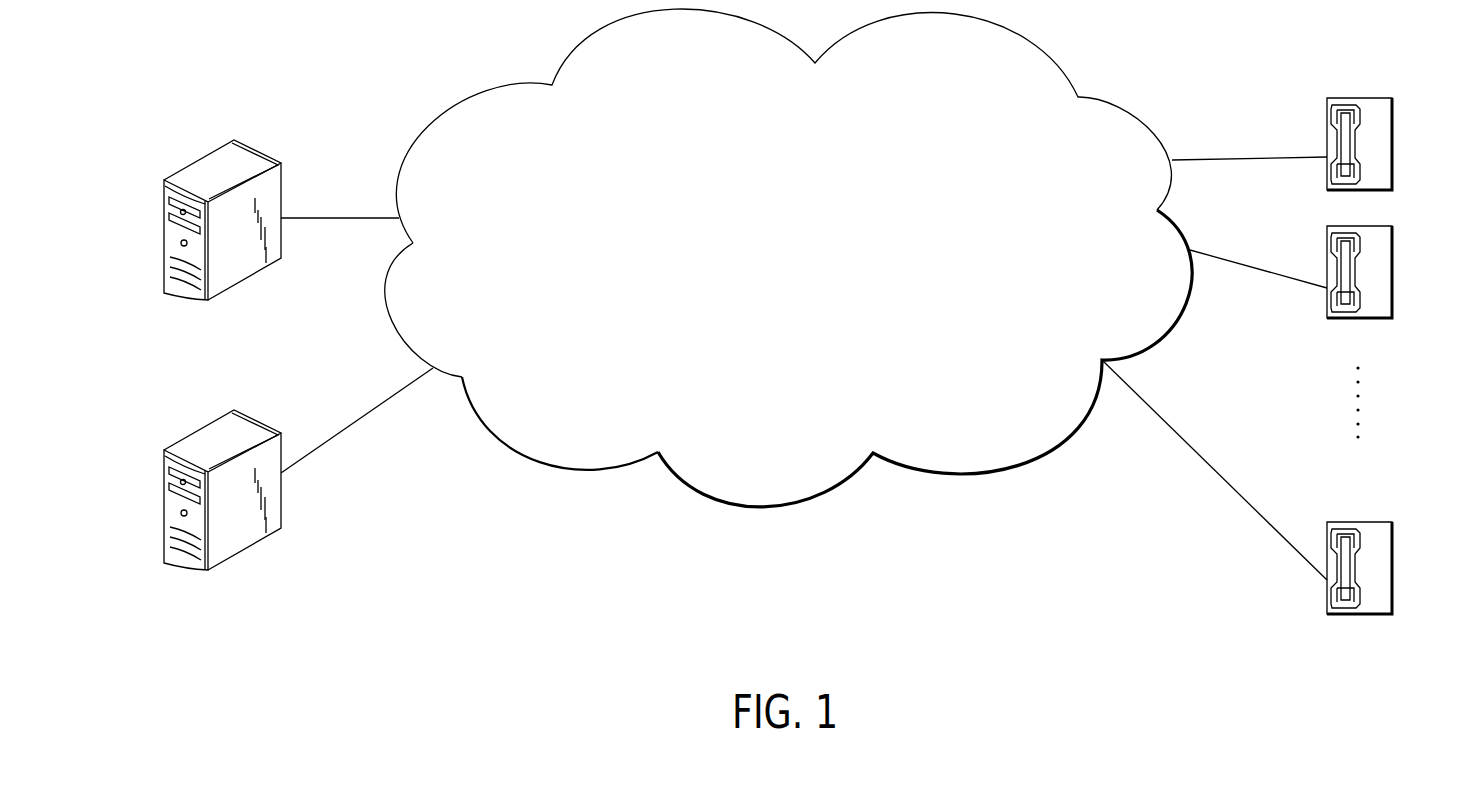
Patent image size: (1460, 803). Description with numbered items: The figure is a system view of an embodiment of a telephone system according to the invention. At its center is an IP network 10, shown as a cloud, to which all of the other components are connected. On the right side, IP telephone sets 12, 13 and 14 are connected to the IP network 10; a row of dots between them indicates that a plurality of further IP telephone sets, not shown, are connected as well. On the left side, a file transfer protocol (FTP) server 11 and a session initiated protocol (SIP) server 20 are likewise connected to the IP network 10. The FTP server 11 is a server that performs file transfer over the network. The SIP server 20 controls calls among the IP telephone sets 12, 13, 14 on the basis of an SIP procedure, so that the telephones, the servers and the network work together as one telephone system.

The IP network 10 is at (760, 505).
The file transfer protocol (FTP) server 11 is at (246, 425).
The IP telephone set 12 is at (1393, 130).
The IP telephone set 13 is at (1393, 258).
The IP telephone set 14 is at (1393, 553).
The session initiated protocol (SIP) server 20 is at (246, 155).